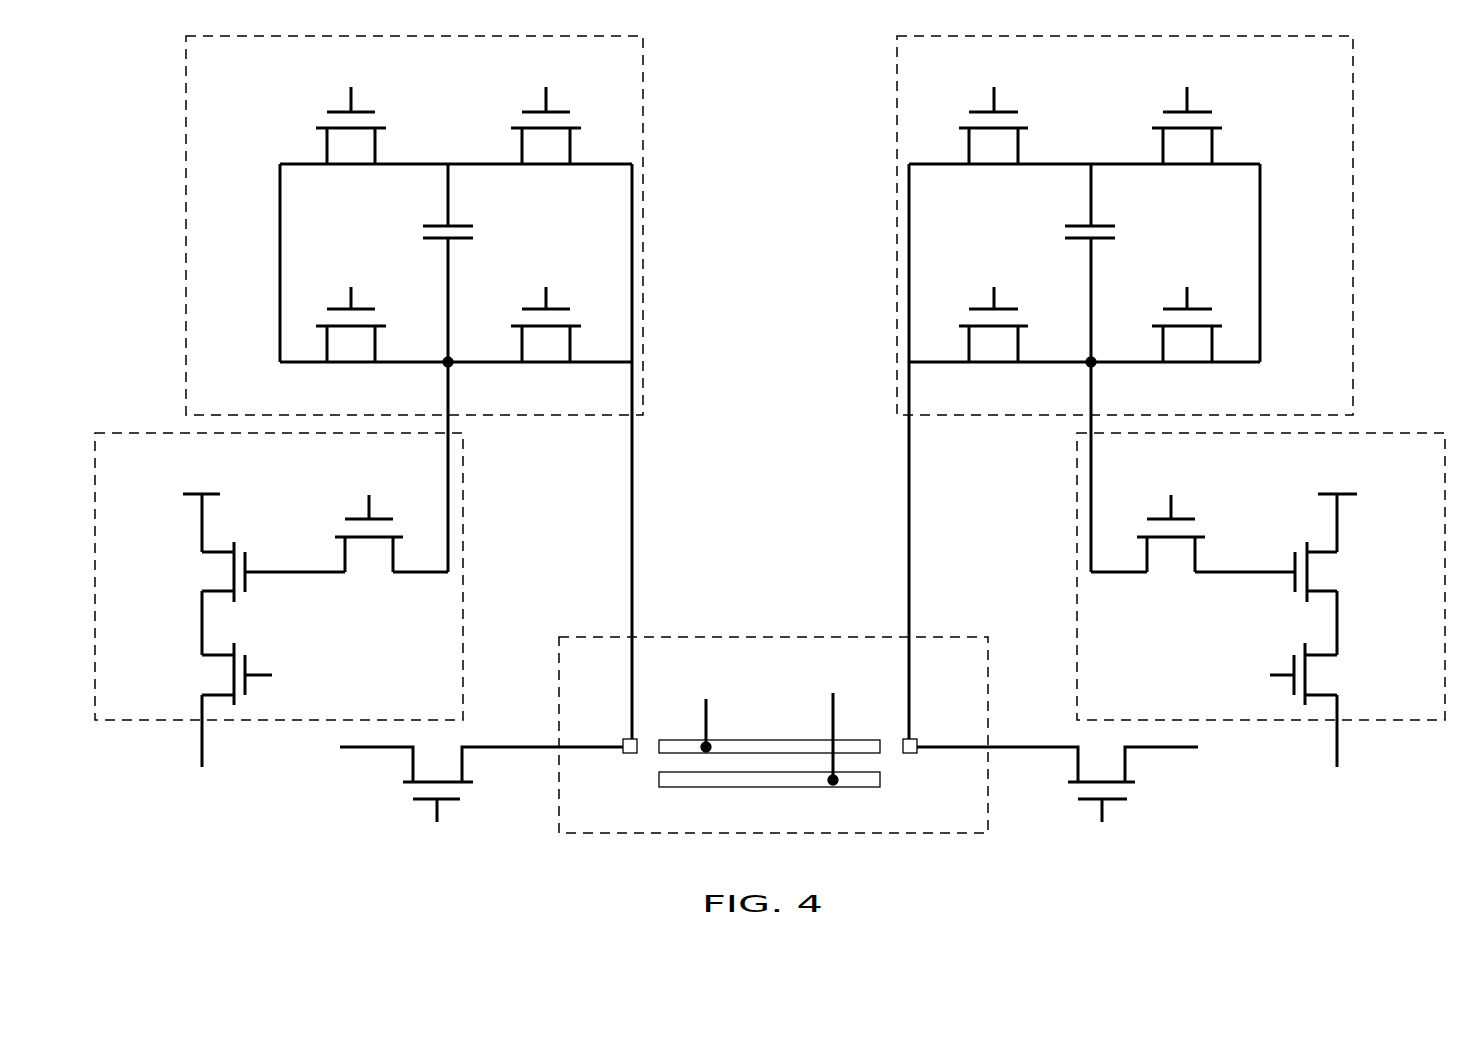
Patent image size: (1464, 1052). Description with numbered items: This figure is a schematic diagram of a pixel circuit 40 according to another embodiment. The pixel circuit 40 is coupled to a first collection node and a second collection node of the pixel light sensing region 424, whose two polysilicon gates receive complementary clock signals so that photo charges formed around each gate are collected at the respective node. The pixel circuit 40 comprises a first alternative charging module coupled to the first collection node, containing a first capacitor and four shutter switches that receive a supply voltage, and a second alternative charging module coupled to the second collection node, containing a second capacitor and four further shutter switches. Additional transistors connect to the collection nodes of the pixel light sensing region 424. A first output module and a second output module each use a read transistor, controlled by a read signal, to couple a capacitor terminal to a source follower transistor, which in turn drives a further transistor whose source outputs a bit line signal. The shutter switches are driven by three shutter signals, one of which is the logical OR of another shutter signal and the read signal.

The pixel circuit 40 is at (170, 78).
The pixel light sensing region 424 is at (775, 637).